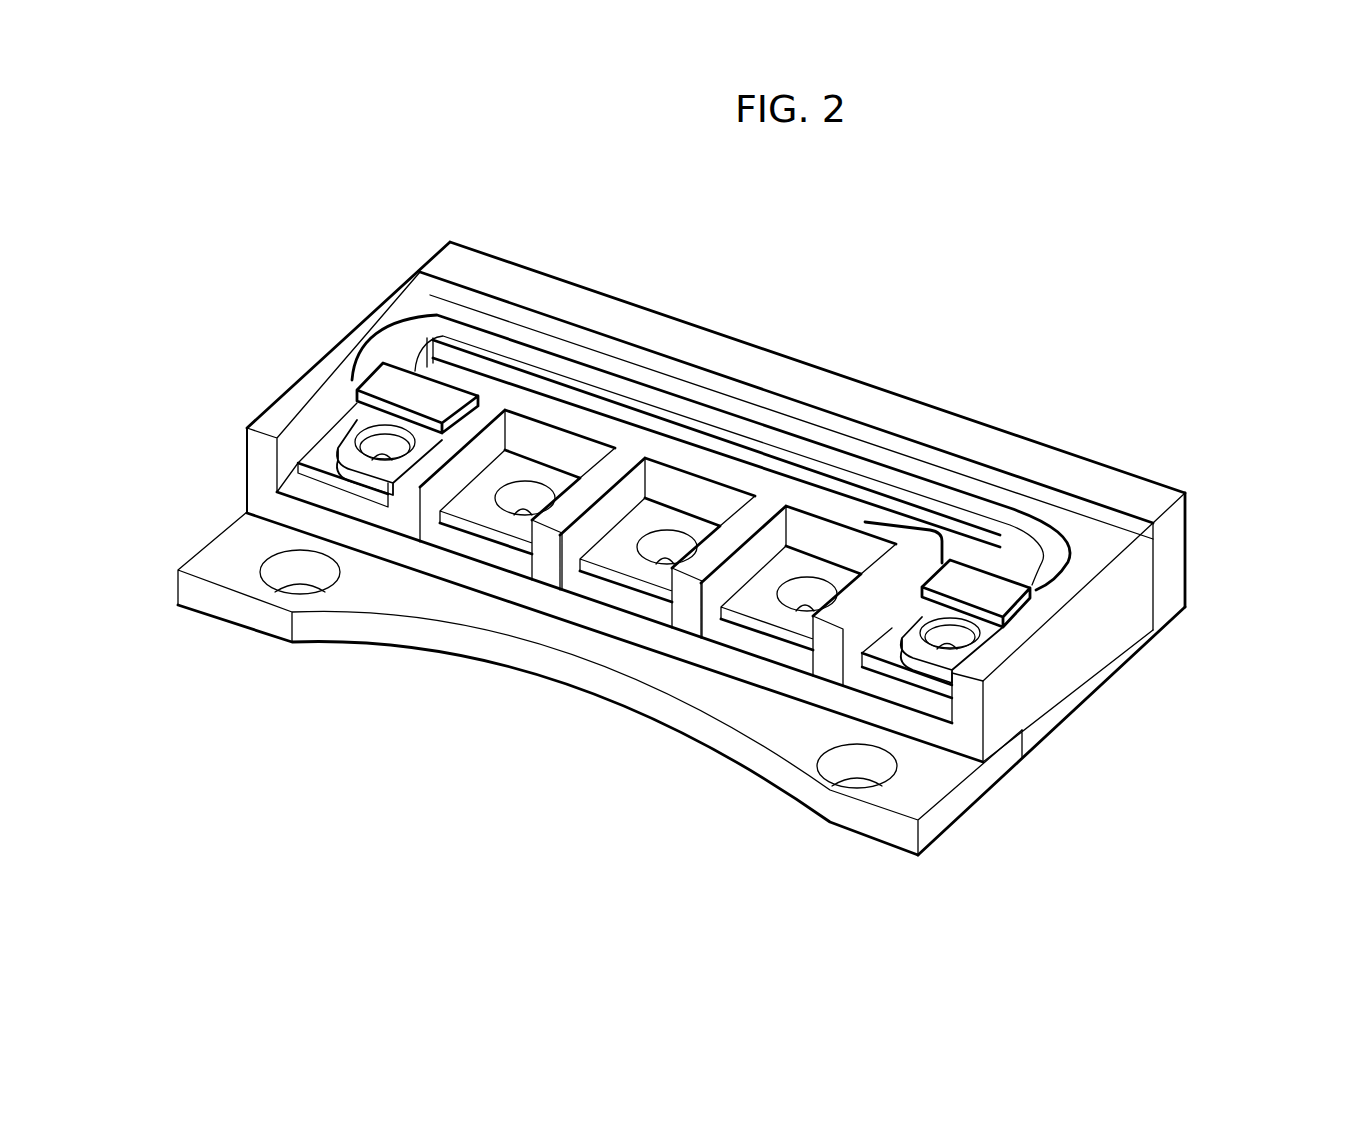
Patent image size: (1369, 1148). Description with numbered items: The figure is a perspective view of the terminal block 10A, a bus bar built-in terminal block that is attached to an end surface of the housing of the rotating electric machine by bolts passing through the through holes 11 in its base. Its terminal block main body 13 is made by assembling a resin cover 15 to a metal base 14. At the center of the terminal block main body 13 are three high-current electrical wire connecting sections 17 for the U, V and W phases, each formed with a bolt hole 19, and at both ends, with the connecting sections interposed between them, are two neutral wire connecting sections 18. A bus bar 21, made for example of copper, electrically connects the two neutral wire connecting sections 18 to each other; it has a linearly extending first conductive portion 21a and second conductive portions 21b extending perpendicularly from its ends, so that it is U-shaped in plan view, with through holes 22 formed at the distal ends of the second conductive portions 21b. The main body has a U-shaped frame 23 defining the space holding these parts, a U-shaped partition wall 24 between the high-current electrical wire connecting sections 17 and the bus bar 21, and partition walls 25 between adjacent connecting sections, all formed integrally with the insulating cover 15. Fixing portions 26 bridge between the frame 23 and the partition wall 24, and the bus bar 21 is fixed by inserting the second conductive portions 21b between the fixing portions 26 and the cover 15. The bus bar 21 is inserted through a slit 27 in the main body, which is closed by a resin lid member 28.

The terminal block 10A is at (1105, 411).
The through holes 11 is at (267, 590).
The terminal block main body 13 is at (326, 348).
The base 14 is at (540, 667).
The cover 15 is at (1122, 655).
The high-current electrical wire connecting sections 17 is at (467, 513).
The neutral wire connecting sections 18 is at (316, 478).
The bolt holes 19 is at (520, 512).
The bus bar 21 is at (976, 527).
The first conductive portion 21a is at (880, 508).
The second conductive portions 21b is at (375, 418).
The through holes 22 is at (378, 455).
The frame 23 is at (705, 470).
The partition wall 24 is at (735, 512).
The partition walls 25 is at (692, 375).
The fixing portions 26 is at (397, 381).
The slit 27 is at (580, 285).
The lid member 28 is at (1177, 567).